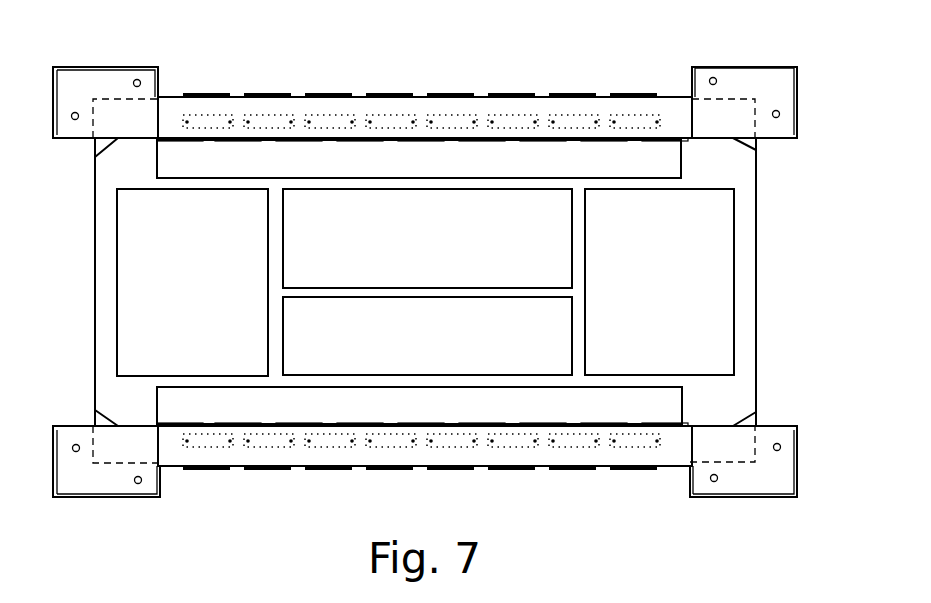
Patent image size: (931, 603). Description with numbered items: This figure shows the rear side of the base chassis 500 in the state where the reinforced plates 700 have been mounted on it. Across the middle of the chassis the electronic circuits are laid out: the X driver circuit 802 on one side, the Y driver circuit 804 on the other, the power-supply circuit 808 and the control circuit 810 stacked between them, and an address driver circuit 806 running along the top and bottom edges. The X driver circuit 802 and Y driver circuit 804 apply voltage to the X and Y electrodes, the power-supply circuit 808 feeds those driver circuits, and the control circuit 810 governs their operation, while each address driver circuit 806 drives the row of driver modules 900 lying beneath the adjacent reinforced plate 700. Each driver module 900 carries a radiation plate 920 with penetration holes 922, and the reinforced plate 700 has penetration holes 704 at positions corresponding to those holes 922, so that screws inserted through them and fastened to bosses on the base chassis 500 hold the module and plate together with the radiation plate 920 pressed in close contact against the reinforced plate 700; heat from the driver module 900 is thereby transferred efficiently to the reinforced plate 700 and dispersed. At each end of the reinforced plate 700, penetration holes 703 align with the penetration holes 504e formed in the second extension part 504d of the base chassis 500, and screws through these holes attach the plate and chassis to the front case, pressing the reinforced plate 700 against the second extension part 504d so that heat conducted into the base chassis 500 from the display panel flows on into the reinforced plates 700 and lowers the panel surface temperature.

The base chassis 500 is at (745, 181).
The second extension part 504d is at (162, 69).
The penetration holes 504e is at (78, 113).
The penetration holes 703 is at (136, 79).
The reinforced plates 700 is at (484, 106).
The penetration holes 704 is at (291, 120).
The penetration holes 922 is at (310, 120).
The driver modules 900 is at (562, 93).
The radiation plate 920 is at (384, 113).
The address driver circuits 806 is at (437, 165).
The power-supply circuit 808 is at (437, 240).
The control circuit 810 is at (437, 336).
The Y driver circuit 804 is at (211, 290).
The X driver circuit 802 is at (679, 288).